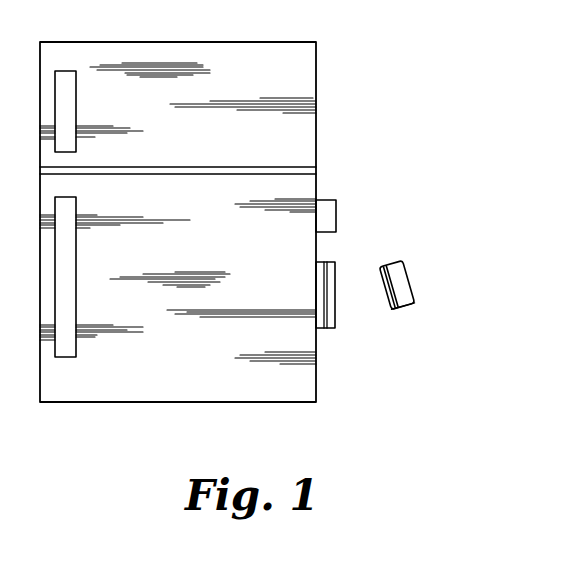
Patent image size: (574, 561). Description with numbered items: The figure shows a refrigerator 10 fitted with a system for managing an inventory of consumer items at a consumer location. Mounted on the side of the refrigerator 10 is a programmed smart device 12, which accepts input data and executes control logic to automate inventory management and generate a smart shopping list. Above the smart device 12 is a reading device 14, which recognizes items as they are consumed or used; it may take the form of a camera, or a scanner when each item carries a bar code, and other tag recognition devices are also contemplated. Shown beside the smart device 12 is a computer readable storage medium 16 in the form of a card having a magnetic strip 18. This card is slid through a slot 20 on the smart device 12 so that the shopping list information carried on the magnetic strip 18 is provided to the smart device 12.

The refrigerator 10 is at (318, 120).
The smart device 12 is at (335, 265).
The reading device 14 is at (336, 208).
The computer readable storage medium 16 is at (410, 270).
The magnetic strip 18 is at (398, 308).
The slot 20 is at (330, 328).